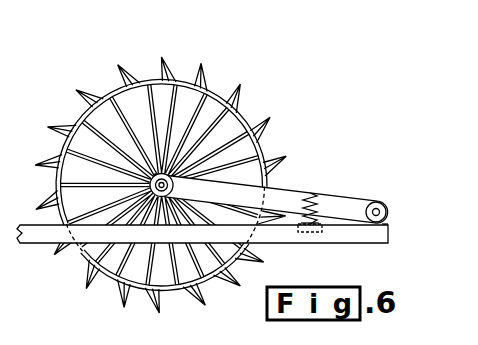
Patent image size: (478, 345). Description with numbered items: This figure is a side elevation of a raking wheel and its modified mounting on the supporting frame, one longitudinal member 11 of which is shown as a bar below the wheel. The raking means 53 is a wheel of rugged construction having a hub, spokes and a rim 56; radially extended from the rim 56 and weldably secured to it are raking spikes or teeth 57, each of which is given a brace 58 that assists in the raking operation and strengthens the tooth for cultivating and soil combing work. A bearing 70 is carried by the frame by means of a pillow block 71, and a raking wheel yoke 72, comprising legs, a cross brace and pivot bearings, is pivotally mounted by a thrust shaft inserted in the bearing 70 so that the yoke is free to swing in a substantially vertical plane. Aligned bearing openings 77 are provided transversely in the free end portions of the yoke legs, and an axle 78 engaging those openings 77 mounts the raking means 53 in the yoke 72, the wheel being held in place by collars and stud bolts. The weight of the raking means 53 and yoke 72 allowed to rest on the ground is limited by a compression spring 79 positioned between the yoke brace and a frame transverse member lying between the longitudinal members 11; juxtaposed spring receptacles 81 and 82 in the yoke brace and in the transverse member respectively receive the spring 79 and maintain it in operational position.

The longitudinal member 11 is at (32, 241).
The raking means 53 is at (164, 176).
The rim 56 is at (269, 145).
The raking spikes or teeth 57 is at (166, 61).
The brace 58 is at (212, 79).
The bearing 70 is at (387, 208).
The pillow block 71 is at (389, 222).
The raking wheel yoke 72 is at (347, 186).
The bearing opening 77 is at (60, 184).
The axle 78 is at (98, 151).
The compression spring 79 is at (299, 224).
The spring receptacle 81 is at (306, 193).
The spring receptacle 82 is at (320, 233).